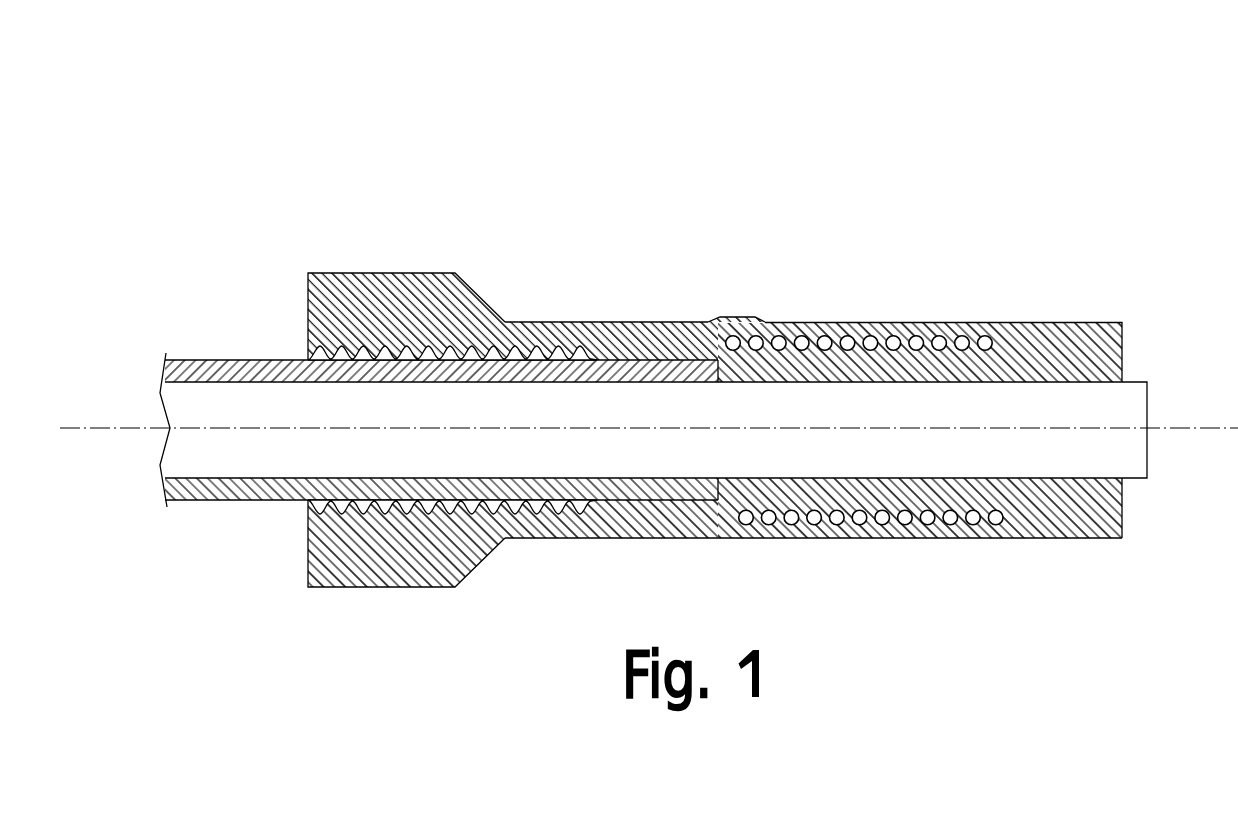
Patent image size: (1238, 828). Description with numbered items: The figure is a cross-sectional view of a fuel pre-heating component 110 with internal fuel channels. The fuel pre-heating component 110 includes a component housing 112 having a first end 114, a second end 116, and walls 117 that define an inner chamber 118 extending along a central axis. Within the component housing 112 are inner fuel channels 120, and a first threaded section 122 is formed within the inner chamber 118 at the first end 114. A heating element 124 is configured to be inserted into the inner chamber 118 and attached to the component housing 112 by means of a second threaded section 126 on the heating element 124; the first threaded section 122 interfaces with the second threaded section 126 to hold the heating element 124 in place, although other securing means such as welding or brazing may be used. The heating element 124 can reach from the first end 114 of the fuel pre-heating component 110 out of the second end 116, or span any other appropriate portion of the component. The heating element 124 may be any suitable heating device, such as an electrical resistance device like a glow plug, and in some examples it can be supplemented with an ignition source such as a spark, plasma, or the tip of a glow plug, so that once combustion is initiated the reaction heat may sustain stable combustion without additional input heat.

The fuel pre-heating component 110 is at (649, 308).
The component housing 112 is at (658, 322).
The first end 114 is at (342, 273).
The second end 116 is at (1088, 323).
The walls 117 is at (1028, 343).
The inner chamber 118 is at (717, 380).
The inner fuel channels 120 is at (871, 343).
The first threaded section 122 is at (463, 348).
The heating element 124 is at (572, 408).
The second threaded section 126 is at (525, 350).